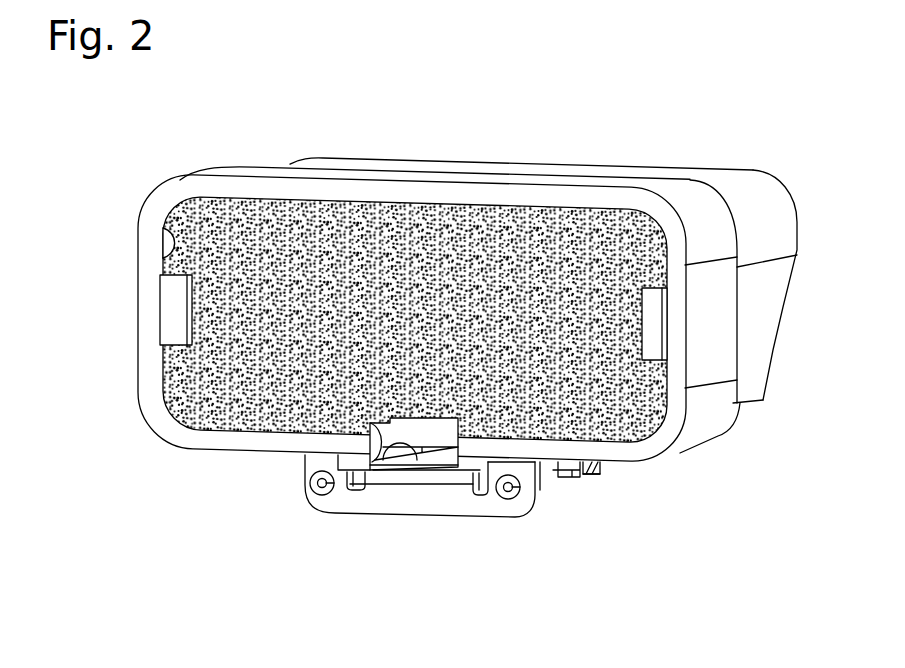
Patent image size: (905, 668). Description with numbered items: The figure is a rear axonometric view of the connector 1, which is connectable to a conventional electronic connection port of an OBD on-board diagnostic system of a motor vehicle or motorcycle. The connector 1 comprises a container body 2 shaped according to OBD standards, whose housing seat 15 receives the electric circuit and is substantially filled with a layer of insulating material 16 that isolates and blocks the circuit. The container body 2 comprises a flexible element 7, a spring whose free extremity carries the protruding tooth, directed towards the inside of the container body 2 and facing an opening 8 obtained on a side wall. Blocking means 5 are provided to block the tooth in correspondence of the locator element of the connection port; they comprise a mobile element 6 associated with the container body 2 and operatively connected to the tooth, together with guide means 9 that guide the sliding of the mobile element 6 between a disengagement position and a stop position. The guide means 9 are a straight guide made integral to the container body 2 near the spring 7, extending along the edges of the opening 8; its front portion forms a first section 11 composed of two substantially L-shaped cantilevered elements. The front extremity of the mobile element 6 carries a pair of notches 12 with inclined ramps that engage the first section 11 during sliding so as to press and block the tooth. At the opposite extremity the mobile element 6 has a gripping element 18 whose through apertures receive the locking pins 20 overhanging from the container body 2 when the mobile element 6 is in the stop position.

The connector 1 is at (786, 54).
The container body 2 is at (753, 320).
The blocking means 5 is at (425, 527).
The mobile element 6 is at (473, 503).
The flexible element 7 is at (368, 473).
The opening 8 is at (350, 435).
The guide means 9 is at (603, 496).
The first section 11 is at (593, 473).
The notches 12 is at (555, 472).
The housing seat 15 is at (140, 227).
The insulating material 16 is at (220, 410).
The gripping element 18 is at (398, 503).
The locking pins 20 is at (312, 492).